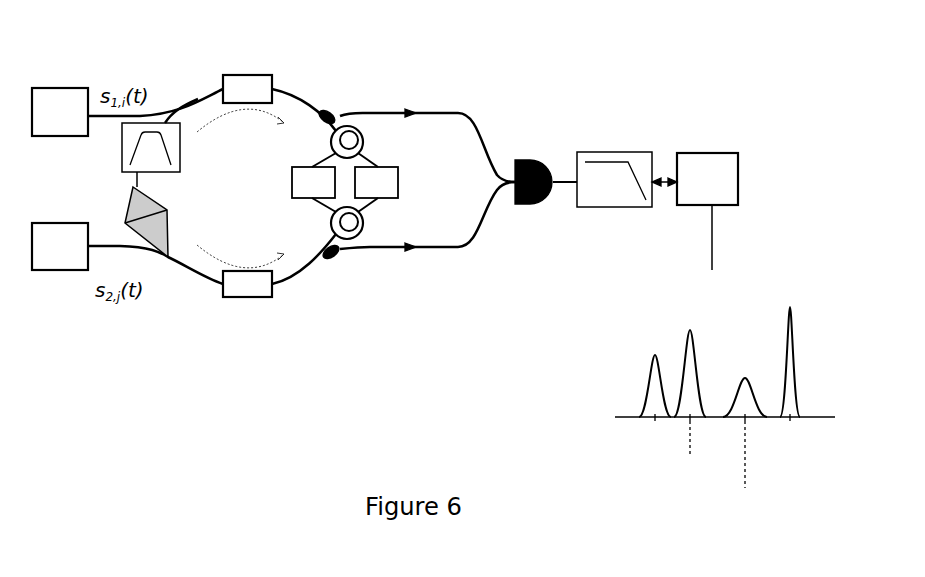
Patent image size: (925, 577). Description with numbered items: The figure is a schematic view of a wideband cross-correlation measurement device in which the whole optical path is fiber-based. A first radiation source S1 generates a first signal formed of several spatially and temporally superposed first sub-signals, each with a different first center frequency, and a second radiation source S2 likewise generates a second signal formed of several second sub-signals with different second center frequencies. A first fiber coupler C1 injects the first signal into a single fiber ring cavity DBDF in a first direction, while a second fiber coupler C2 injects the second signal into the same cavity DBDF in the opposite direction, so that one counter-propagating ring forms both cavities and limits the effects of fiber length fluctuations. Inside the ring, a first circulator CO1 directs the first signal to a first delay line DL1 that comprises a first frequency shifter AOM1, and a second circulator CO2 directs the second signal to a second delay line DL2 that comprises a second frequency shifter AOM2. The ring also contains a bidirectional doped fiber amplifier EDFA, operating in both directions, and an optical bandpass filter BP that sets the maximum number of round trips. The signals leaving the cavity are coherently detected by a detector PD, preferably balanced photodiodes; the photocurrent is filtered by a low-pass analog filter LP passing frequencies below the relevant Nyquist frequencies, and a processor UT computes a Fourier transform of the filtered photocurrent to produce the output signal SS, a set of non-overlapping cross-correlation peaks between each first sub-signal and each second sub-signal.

The first radiation source S1 is at (60, 86).
The second radiation source S2 is at (60, 272).
The single fiber ring cavity DBDF is at (185, 60).
The first fiber coupler C1 is at (245, 74).
The second fiber coupler C2 is at (243, 298).
The optical bandpass filter BP is at (181, 148).
The bidirectional doped fiber amplifier EDFA is at (167, 202).
The first circulator CO1 is at (348, 126).
The second circulator CO2 is at (348, 240).
The first frequency shifter AOM1 is at (292, 182).
The second frequency shifter AOM2 is at (398, 181).
The first delay line DL1 is at (308, 207).
The second delay line DL2 is at (378, 207).
The detector PD is at (533, 156).
The low-pass analog filter LP is at (625, 152).
The processor UT is at (707, 152).
The output signal SS is at (675, 272).